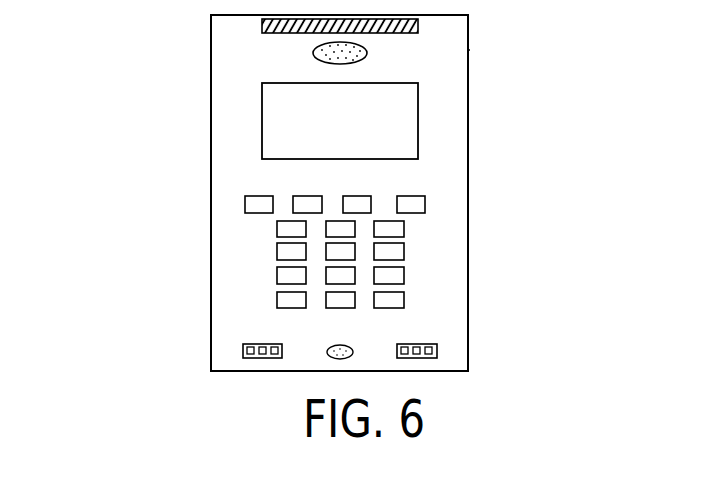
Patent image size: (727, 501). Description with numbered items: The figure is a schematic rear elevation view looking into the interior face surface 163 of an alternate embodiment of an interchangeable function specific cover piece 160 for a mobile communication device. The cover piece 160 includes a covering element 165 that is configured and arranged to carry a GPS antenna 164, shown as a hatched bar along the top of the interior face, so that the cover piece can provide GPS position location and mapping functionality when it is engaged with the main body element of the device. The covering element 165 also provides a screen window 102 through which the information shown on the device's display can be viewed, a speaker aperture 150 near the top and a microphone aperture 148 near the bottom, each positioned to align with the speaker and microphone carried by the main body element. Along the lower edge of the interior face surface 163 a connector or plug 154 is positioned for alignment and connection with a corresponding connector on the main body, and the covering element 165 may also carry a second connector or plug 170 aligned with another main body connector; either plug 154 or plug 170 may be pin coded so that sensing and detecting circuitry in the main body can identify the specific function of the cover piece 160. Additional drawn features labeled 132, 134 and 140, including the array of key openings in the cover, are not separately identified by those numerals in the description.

The screen window 102 is at (394, 121).
The housing 132 is at (468, 50).
The keypad 134 is at (229, 183).
The keys 140 is at (406, 248).
The microphone aperture 148 is at (331, 362).
The speaker aperture 150 is at (313, 50).
The connector or plug 154 is at (452, 353).
The function specific interchangeable cover piece 160 is at (522, 100).
The interior face surface 163 is at (260, 331).
The GPS antenna 164 is at (261, 27).
The covering element 165 is at (470, 308).
The second connector or plug 170 is at (241, 352).